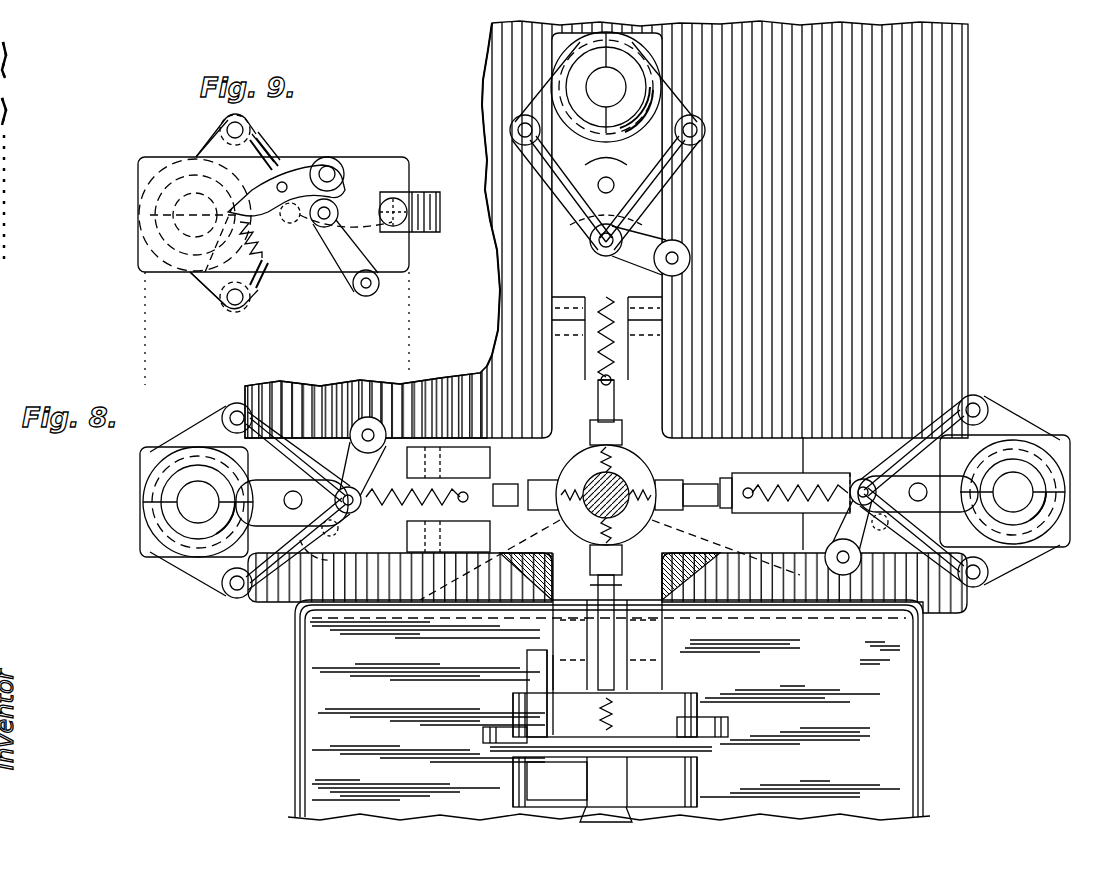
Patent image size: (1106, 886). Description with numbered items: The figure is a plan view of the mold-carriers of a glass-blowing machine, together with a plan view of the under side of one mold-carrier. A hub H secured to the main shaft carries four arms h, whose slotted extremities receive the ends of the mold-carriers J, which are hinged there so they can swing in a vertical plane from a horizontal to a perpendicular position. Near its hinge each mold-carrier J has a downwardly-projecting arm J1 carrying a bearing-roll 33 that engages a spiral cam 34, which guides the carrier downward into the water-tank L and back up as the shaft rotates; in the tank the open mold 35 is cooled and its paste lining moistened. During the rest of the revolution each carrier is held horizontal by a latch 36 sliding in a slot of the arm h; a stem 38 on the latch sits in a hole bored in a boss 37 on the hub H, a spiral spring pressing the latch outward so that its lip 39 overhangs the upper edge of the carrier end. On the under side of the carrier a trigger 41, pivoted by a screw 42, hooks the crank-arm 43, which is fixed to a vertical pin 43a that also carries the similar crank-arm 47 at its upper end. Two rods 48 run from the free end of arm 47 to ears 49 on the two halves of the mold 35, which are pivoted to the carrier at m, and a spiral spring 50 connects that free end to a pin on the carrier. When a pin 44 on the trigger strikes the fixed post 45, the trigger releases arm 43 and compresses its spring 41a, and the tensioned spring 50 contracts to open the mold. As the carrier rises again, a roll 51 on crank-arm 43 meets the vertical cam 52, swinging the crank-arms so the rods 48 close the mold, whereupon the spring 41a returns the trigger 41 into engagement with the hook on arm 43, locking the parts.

In FIG. 9, the bearing-roll 33 is at (402, 198).
In FIG. 8, the cam 34 is at (545, 560).
In FIG. 8, the mold 35 is at (148, 520).
In FIG. 8, the latch 36 is at (505, 490).
In FIG. 8, the boss 37 is at (592, 432).
In FIG. 8, the stem 38 is at (598, 412).
In FIG. 8, the lip 39 is at (500, 492).
In FIG. 9, the trigger 41 is at (316, 160).
In FIG. 8, the trigger 41 is at (205, 560).
In FIG. 9, the spring 41a is at (212, 272).
In FIG. 9, the screw 42 is at (284, 182).
In FIG. 9, the crank-arm 43 is at (338, 250).
In FIG. 8, the crank-arm 43 is at (527, 660).
In FIG. 9, the vertical pin 43a is at (352, 292).
In FIG. 8, the vertical pin 43a is at (690, 258).
In FIG. 9, the pin 44 is at (330, 168).
In FIG. 8, the pin 44 is at (345, 520).
In FIG. 8, the post 45 is at (547, 685).
In FIG. 9, the crank-arm 47 is at (405, 242).
In FIG. 8, the crank-arm 47 is at (640, 236).
In FIG. 9, the rods 48 is at (262, 140).
In FIG. 8, the rods 48 is at (590, 210).
In FIG. 9, the ears 49 is at (228, 124).
In FIG. 8, the ears 49 is at (230, 408).
In FIG. 9, the spiral spring 50 is at (251, 240).
In FIG. 8, the spiral spring 50 is at (603, 330).
In FIG. 9, the roll 51 is at (336, 204).
In FIG. 8, the vertical cam 52 is at (300, 560).
In FIG. 9, the mold-carrier J is at (138, 240).
In FIG. 8, the mold-carrier J is at (660, 55).
In FIG. 9, the downwardly-projecting arm J1 is at (430, 200).
In FIG. 8, the mold pivot m is at (614, 183).
In FIG. 8, the hub H is at (620, 450).
In FIG. 8, the arms h is at (609, 500).
In FIG. 8, the water-tank L is at (609, 710).